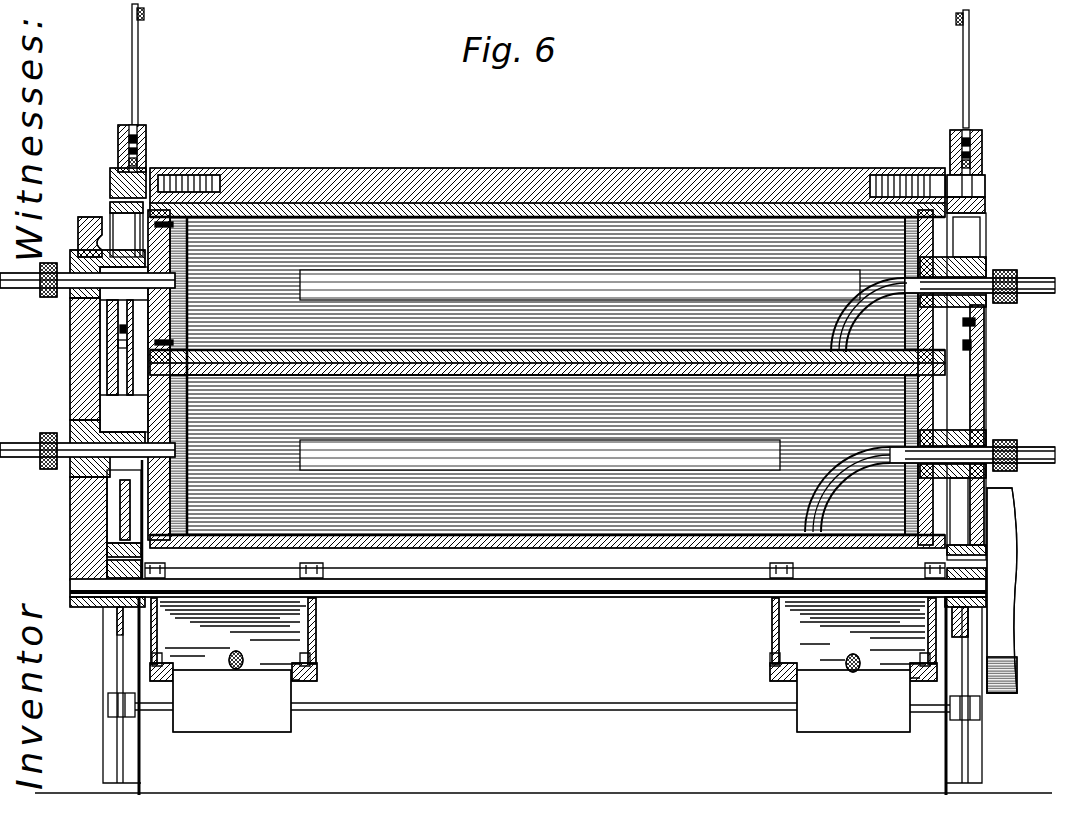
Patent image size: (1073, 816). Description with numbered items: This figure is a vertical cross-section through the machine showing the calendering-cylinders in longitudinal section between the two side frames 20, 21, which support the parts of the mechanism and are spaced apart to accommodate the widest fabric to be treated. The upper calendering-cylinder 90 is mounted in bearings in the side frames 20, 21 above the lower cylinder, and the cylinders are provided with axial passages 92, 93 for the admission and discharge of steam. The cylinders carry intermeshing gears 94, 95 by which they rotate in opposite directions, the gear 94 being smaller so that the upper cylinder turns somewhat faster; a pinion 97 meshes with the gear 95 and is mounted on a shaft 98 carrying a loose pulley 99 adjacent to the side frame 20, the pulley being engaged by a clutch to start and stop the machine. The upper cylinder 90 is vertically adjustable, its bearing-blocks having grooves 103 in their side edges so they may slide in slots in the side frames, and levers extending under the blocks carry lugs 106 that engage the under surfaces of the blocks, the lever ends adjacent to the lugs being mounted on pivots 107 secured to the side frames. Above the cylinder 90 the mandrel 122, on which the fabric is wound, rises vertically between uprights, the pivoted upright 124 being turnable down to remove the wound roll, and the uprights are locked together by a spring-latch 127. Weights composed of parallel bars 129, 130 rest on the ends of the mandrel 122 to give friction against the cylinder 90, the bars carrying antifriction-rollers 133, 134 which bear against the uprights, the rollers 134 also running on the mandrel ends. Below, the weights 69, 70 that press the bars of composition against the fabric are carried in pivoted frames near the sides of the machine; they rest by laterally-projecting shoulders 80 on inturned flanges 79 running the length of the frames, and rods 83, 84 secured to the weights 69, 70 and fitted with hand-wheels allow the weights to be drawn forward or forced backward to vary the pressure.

The side frame 20 is at (120, 375).
The side frame 21 is at (975, 380).
The weight 69 is at (840, 723).
The weight 70 is at (250, 723).
The inturned flange 79 is at (538, 650).
The laterally-projecting shoulder 80 is at (160, 658).
The rod 83 is at (850, 670).
The rod 84 is at (234, 668).
The upper calendering-cylinder 90 is at (546, 283).
The axial passage 92 is at (190, 288).
The axial passage 93 is at (972, 282).
The gear 94 is at (75, 334).
The gear 95 is at (75, 404).
The pinion 97 is at (82, 600).
The shaft 98 is at (390, 587).
The loose pulley 99 is at (1005, 640).
The groove 103 is at (975, 245).
The lug 106 is at (190, 322).
The pivot 107 is at (118, 330).
The mandrel 122 is at (533, 182).
The upright 124 is at (137, 80).
The spring-latch 127 is at (142, 13).
The bar 129 is at (140, 148).
The bar 130 is at (118, 140).
The antifriction-roller 133 is at (136, 126).
The antifriction-roller 134 is at (140, 160).